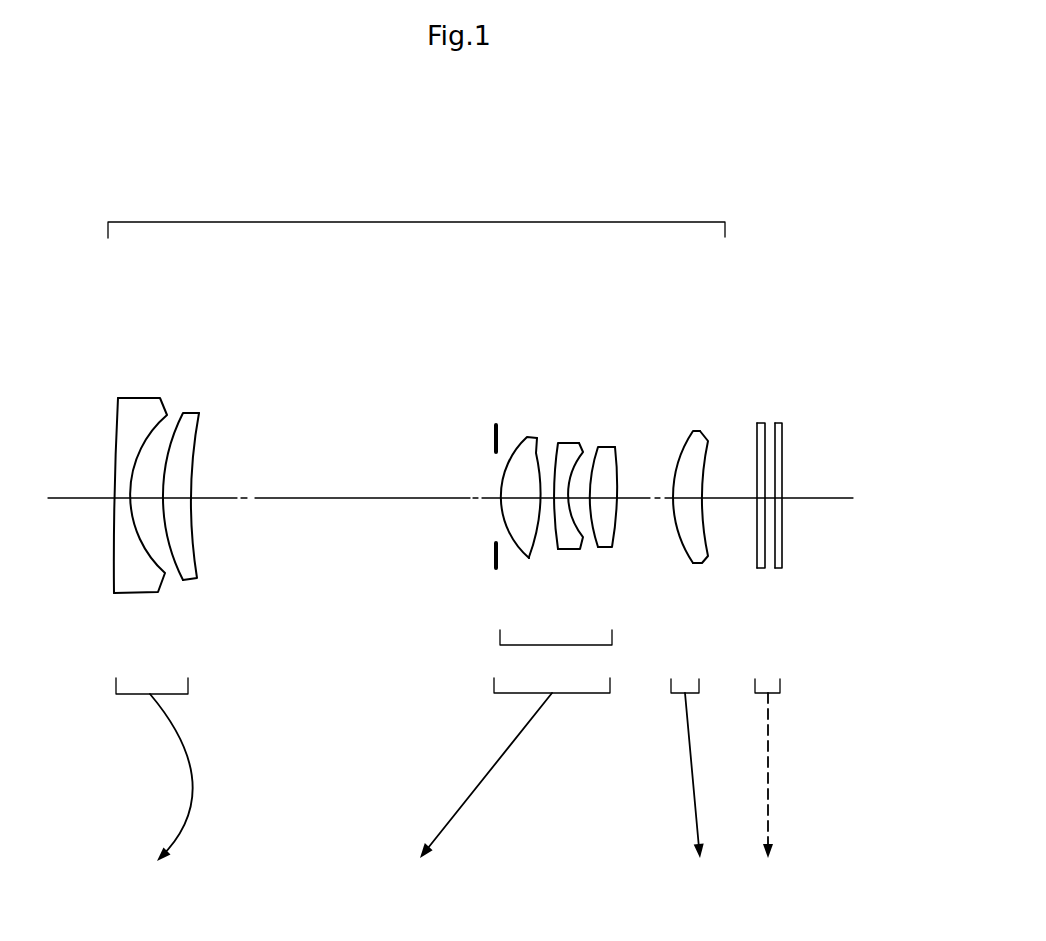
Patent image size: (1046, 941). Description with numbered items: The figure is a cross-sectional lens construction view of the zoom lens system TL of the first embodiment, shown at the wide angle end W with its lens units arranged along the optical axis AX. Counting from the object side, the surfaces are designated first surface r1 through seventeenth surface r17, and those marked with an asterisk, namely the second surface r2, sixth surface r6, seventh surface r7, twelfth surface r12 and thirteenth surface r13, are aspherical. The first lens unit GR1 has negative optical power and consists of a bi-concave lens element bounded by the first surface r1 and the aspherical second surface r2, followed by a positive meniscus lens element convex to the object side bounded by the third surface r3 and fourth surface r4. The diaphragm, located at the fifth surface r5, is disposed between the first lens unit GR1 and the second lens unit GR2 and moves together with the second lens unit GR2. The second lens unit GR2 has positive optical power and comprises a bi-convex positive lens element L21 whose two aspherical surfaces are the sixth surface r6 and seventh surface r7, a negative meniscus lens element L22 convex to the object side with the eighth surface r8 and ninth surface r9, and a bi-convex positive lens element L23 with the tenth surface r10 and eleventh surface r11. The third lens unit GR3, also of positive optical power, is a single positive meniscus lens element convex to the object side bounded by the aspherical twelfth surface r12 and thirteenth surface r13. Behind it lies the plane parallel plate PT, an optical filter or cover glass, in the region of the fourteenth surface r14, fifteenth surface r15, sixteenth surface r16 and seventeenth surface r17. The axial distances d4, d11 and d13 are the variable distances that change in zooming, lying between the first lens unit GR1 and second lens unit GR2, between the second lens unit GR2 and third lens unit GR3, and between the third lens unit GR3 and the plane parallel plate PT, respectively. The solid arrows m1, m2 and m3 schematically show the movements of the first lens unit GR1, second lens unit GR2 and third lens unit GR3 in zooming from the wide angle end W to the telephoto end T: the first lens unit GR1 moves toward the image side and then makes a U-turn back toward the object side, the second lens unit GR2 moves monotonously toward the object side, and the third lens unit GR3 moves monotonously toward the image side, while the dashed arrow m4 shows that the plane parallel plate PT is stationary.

The first surface r1 is at (117, 418).
The second surface r2 is at (153, 427).
The third surface r3 is at (178, 418).
The fourth surface r4 is at (198, 435).
The fifth surface (diaphragm) r5 is at (493, 440).
The sixth surface r6 is at (515, 447).
The seventh surface r7 is at (527, 437).
The eighth surface r8 is at (556, 443).
The ninth surface r9 is at (568, 445).
The tenth surface r10 is at (597, 447).
The eleventh surface r11 is at (617, 457).
The twelfth surface r12 is at (682, 450).
The thirteenth surface r13 is at (700, 433).
The fourteenth surface r14 is at (756, 433).
The fifteenth surface r15 is at (771, 425).
The sixteenth surface r16 is at (774, 427).
The seventeenth surface r17 is at (783, 435).
The fourth axial distance d4 is at (341, 483).
The eleventh axial distance d11 is at (647, 483).
The thirteenth axial distance d13 is at (730, 483).
The bi-convex positive lens element L21 is at (481, 468).
The negative meniscus lens element L22 is at (538, 457).
The bi-convex positive lens element L23 is at (606, 459).
The first lens unit GR1 is at (166, 512).
The second lens unit GR2 is at (511, 485).
The third lens unit GR3 is at (689, 511).
The plane parallel plate PT is at (791, 508).
The zoom lens system TL is at (416, 214).
The optical axis AX is at (817, 498).
The movement arrow of first lens unit m1 is at (193, 785).
The movement arrow of second lens unit m2 is at (480, 783).
The movement arrow of third lens unit m3 is at (692, 785).
The stationary arrow of plane parallel plate m4 is at (768, 788).
The wide angle end W is at (921, 690).
The telephoto end T is at (919, 858).